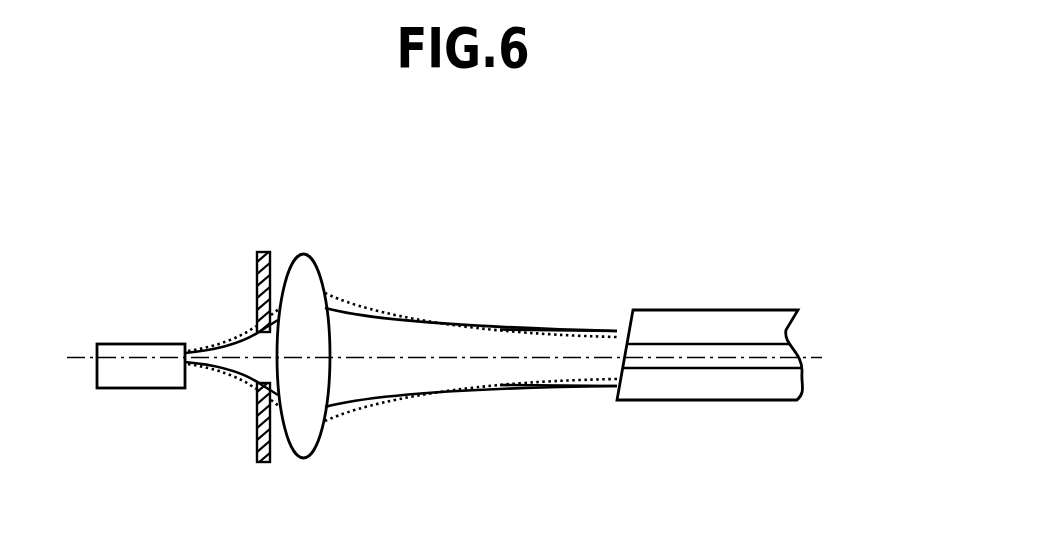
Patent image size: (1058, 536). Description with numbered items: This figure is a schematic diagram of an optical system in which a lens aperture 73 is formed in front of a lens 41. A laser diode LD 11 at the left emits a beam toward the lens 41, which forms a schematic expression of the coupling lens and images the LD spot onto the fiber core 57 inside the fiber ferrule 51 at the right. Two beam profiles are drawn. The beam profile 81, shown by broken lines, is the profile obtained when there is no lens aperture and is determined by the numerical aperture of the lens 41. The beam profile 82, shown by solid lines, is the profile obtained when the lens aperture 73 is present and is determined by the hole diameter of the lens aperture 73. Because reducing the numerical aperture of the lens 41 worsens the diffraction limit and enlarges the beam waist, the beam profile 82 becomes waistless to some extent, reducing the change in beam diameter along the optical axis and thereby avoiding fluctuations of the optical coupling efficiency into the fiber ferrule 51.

The LD 11 is at (126, 343).
The lens aperture 73 is at (257, 275).
The lens 41 is at (302, 254).
The beam profile 81 is at (340, 298).
The beam profile 82 is at (562, 328).
The fiber ferrule 51 is at (690, 310).
The fiber core 57 is at (745, 354).